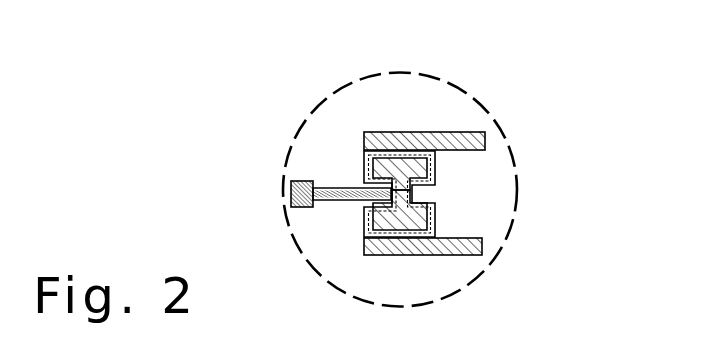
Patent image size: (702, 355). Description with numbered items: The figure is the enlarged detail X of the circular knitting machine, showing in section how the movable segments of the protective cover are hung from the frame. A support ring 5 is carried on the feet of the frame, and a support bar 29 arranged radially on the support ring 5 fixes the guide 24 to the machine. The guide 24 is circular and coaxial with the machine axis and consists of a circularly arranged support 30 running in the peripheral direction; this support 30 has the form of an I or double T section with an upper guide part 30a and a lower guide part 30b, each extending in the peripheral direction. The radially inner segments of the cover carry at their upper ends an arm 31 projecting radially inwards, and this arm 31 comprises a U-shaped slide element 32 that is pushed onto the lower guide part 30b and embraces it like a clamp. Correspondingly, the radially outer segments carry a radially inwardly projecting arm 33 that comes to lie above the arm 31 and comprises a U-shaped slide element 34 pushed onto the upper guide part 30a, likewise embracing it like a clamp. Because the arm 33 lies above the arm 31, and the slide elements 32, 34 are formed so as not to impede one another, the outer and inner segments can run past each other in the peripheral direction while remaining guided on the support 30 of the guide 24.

The enlarged detail X is at (305, 120).
The guide 24 is at (345, 163).
The support ring 5 is at (292, 181).
The support bar 29 is at (337, 196).
The support 30 is at (401, 165).
The upper guide part 30a is at (400, 163).
The lower guide part 30b is at (392, 215).
The arm 31 is at (458, 255).
The slide element 32 is at (434, 226).
The arm 33 is at (483, 132).
The slide element 34 is at (433, 172).